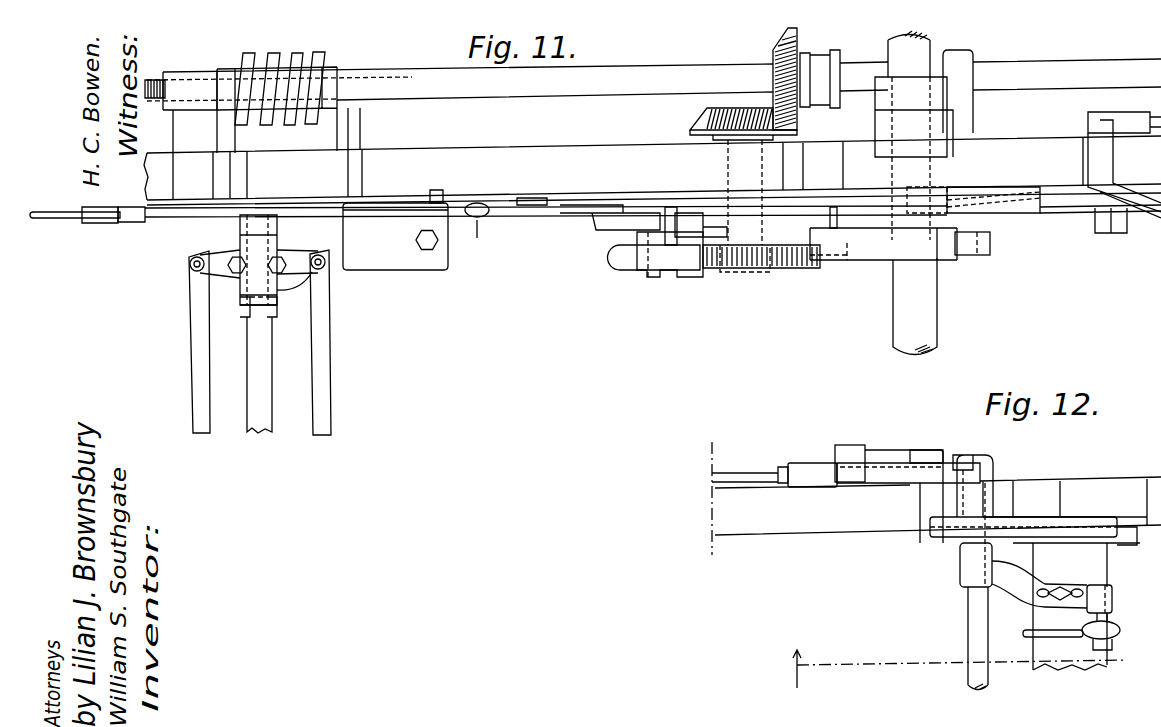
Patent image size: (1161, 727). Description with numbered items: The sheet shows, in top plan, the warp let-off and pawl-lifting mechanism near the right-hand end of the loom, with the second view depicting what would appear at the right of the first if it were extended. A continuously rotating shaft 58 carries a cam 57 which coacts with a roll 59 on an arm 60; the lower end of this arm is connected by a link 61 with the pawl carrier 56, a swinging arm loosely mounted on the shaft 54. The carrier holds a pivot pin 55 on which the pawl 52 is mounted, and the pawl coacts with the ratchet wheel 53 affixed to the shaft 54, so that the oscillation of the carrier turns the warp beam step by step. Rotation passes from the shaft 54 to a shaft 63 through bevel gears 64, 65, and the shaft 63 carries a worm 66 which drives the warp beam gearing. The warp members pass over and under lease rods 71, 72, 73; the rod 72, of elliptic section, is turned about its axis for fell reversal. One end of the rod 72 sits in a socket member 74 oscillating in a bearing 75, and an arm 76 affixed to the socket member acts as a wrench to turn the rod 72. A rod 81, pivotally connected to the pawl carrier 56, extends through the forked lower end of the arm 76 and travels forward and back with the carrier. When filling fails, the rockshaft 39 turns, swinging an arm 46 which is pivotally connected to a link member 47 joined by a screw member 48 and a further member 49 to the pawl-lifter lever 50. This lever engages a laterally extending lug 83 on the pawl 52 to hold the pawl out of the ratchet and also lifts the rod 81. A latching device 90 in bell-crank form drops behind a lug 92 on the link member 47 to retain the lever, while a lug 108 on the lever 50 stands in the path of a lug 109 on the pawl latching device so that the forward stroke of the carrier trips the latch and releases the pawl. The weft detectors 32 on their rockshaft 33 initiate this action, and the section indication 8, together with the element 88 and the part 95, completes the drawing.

In FIG. 11, the shaft 63 is at (530, 93).
In FIG. 11, the worm 66 is at (322, 53).
In FIG. 11, the bevel gear 65 is at (776, 43).
In FIG. 11, the bevel gear 64 is at (702, 119).
In FIG. 11, the shaft 54 is at (753, 163).
In FIG. 11, the link 61 is at (818, 189).
In FIG. 11, the shaft 58 is at (903, 333).
In FIG. 11, the cam 57 is at (866, 262).
In FIG. 11, the lug 108 is at (838, 222).
In FIG. 11, the roll 59 is at (985, 257).
In FIG. 11, the ratchet wheel 53 is at (790, 268).
In FIG. 11, the pawl 52 is at (700, 279).
In FIG. 11, the pivot pin 55 is at (650, 272).
In FIG. 11, the pawl carrier 56 is at (597, 223).
In FIG. 11, the lug 83 is at (670, 207).
In FIG. 11, the lug 109 is at (703, 220).
In FIG. 11, the link member 49 is at (1091, 117).
In FIG. 11, the link member 48 is at (1124, 175).
In FIG. 12, the link member 48 is at (740, 470).
In FIG. 11, the arm 60 is at (1019, 214).
In FIG. 11, the pawl-lifter lever 50 is at (1062, 214).
In FIG. 11, the rod 81 is at (56, 221).
In FIG. 11, the arm 76 is at (163, 221).
In FIG. 11, the bearing 75 is at (283, 245).
In FIG. 11, the socket member 74 is at (279, 312).
In FIG. 11, the lease rod 71 is at (197, 374).
In FIG. 11, the lease rod 72 is at (262, 436).
In FIG. 11, the lease rod 73 is at (323, 366).
In FIG. 11, the housing 88 is at (450, 255).
In FIG. 12, the link member 47 is at (805, 462).
In FIG. 12, the lug 92 is at (845, 445).
In FIG. 12, the latching device 90 is at (890, 450).
In FIG. 12, the arm 46 is at (988, 474).
In FIG. 12, the bar 95 is at (1080, 518).
In FIG. 12, the rockshaft 39 is at (973, 622).
In FIG. 12, the rockshaft 33 is at (1114, 613).
In FIG. 12, the weft detector 32 is at (1032, 631).
In FIG. 12, the section line 8 is at (953, 666).